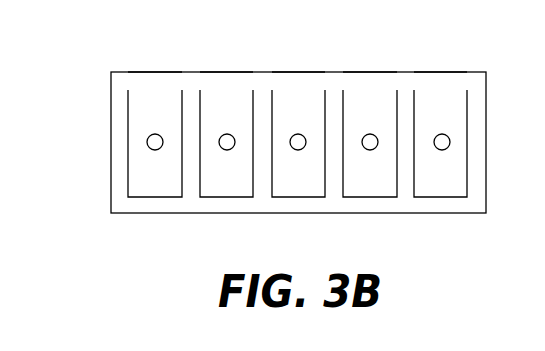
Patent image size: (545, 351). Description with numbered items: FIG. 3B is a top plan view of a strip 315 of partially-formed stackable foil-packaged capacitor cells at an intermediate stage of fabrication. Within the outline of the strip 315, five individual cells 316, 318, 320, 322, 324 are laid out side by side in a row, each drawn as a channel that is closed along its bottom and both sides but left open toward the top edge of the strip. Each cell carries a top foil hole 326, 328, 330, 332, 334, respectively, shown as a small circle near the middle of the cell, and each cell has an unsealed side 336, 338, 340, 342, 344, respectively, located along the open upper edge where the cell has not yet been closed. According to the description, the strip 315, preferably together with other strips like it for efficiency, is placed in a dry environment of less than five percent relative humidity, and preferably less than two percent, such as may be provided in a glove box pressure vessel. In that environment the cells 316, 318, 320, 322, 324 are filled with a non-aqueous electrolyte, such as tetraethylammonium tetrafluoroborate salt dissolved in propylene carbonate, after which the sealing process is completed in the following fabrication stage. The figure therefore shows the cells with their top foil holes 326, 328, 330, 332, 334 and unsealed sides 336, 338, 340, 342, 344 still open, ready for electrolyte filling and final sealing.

The strip 315 is at (111, 97).
The cell 316 is at (158, 187).
The cell 318 is at (229, 187).
The cell 320 is at (300, 187).
The cell 322 is at (371, 187).
The cell 324 is at (441, 187).
The top foil hole 326 is at (147, 142).
The top foil hole 328 is at (226, 134).
The top foil hole 330 is at (298, 134).
The top foil hole 332 is at (369, 134).
The top foil hole 334 is at (449, 141).
The unsealed side 336 is at (156, 84).
The unsealed side 338 is at (230, 84).
The unsealed side 340 is at (301, 84).
The unsealed side 342 is at (371, 84).
The unsealed side 344 is at (441, 84).